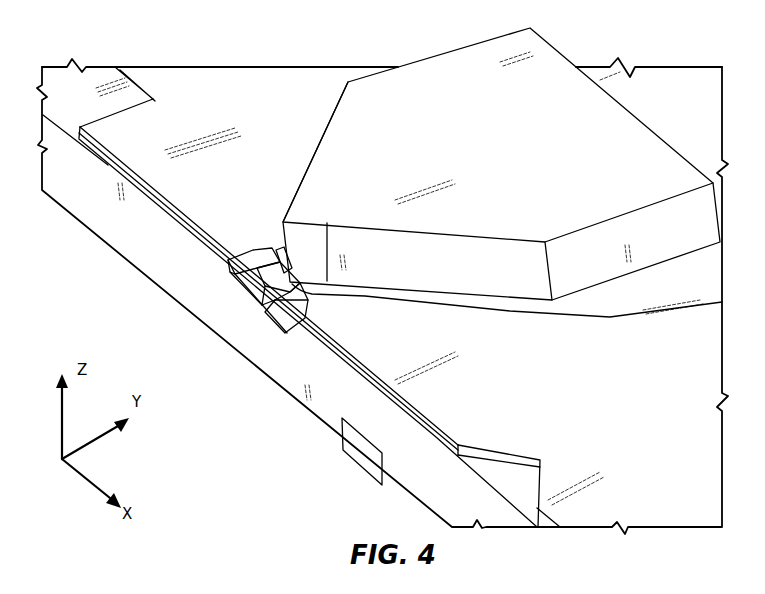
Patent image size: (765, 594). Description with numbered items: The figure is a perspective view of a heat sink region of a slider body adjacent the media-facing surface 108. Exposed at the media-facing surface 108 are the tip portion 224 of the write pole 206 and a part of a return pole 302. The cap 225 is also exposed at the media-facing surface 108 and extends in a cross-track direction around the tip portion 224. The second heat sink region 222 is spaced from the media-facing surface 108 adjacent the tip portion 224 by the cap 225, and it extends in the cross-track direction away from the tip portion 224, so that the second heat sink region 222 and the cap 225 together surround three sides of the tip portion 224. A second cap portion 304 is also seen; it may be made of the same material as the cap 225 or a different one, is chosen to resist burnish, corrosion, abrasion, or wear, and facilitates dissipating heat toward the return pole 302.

The second heat sink region 222 is at (258, 86).
The return pole 302 is at (448, 83).
The write pole 206 is at (278, 253).
The second cap portion 304 is at (233, 264).
The cap 225 is at (235, 279).
The tip portion 224 is at (258, 314).
The media-facing surface 108 is at (362, 469).